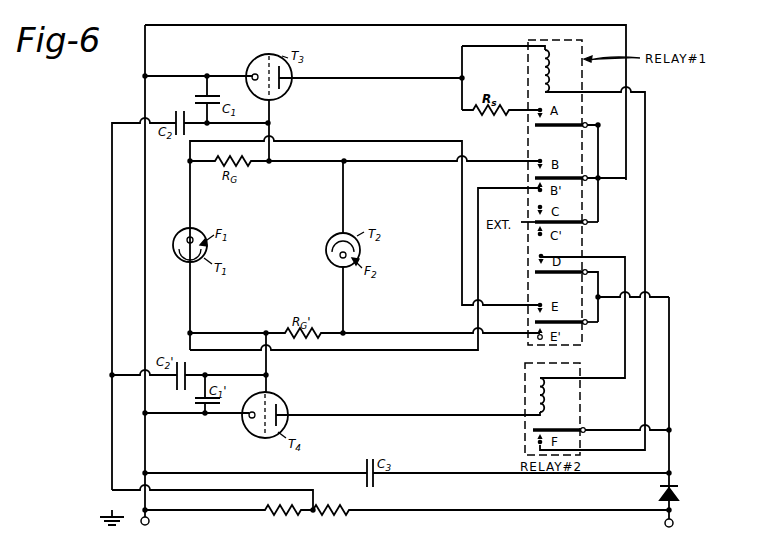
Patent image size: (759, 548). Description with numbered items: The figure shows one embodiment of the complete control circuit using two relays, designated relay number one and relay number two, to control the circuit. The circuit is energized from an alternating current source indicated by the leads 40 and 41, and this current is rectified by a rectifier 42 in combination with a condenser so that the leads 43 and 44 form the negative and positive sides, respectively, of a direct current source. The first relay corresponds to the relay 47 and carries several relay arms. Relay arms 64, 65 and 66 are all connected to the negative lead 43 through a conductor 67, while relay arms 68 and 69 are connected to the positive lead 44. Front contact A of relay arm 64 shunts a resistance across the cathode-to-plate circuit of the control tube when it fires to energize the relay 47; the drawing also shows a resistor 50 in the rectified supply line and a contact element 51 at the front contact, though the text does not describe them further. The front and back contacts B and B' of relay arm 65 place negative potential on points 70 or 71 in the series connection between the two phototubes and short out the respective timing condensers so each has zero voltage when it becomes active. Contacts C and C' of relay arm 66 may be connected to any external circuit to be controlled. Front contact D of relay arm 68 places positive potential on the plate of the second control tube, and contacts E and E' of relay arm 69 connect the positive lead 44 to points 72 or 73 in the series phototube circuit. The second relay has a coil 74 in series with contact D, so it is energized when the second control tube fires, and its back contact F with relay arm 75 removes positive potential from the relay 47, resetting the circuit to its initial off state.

The lead 40 is at (150, 521).
The lead 41 is at (675, 522).
The rectifier 42 is at (680, 496).
The lead 43 is at (145, 289).
The lead 44 is at (672, 385).
The relay 47 is at (541, 68).
The resistor 50 is at (350, 513).
The relay contact 51 is at (537, 118).
The relay arm 64 is at (545, 128).
The relay arm 65 is at (575, 176).
The relay arm 66 is at (580, 224).
The conductor 67 is at (344, 27).
The relay arm 68 is at (548, 274).
The relay arm 69 is at (570, 324).
The point 70 is at (346, 164).
The point 71 is at (193, 330).
The point 72 is at (186, 161).
The point 73 is at (347, 331).
The coil 74 is at (537, 395).
The relay arm 75 is at (576, 430).